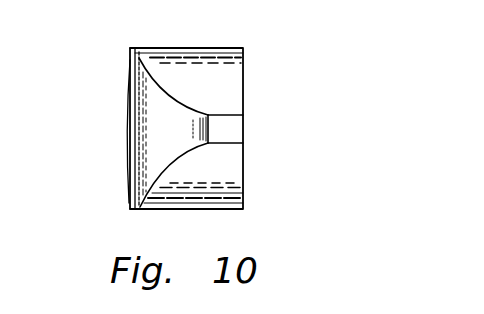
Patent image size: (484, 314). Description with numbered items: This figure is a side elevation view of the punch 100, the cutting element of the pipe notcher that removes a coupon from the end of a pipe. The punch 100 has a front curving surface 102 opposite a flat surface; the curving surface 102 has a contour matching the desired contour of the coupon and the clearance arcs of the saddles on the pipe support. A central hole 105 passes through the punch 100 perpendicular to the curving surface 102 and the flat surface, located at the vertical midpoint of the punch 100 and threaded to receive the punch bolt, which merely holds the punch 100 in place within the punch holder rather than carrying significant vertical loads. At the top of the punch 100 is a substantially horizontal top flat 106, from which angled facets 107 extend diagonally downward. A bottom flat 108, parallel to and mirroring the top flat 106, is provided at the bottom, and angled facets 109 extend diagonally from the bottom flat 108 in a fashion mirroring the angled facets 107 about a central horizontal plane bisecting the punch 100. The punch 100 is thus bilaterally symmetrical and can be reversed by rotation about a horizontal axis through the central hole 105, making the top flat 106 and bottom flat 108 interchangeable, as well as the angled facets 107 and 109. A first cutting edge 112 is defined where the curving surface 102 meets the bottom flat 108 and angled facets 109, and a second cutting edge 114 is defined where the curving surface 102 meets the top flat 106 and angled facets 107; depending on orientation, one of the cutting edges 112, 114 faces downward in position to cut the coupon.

The punch 100 is at (263, 66).
The front curving surface 102 is at (140, 92).
The central hole 105 is at (131, 135).
The top flat 106 is at (190, 49).
The angled facets 107 is at (228, 91).
The bottom flat 108 is at (210, 209).
The angled facets 109 is at (230, 174).
The first cutting edge 112 is at (148, 210).
The second cutting edge 114 is at (145, 68).